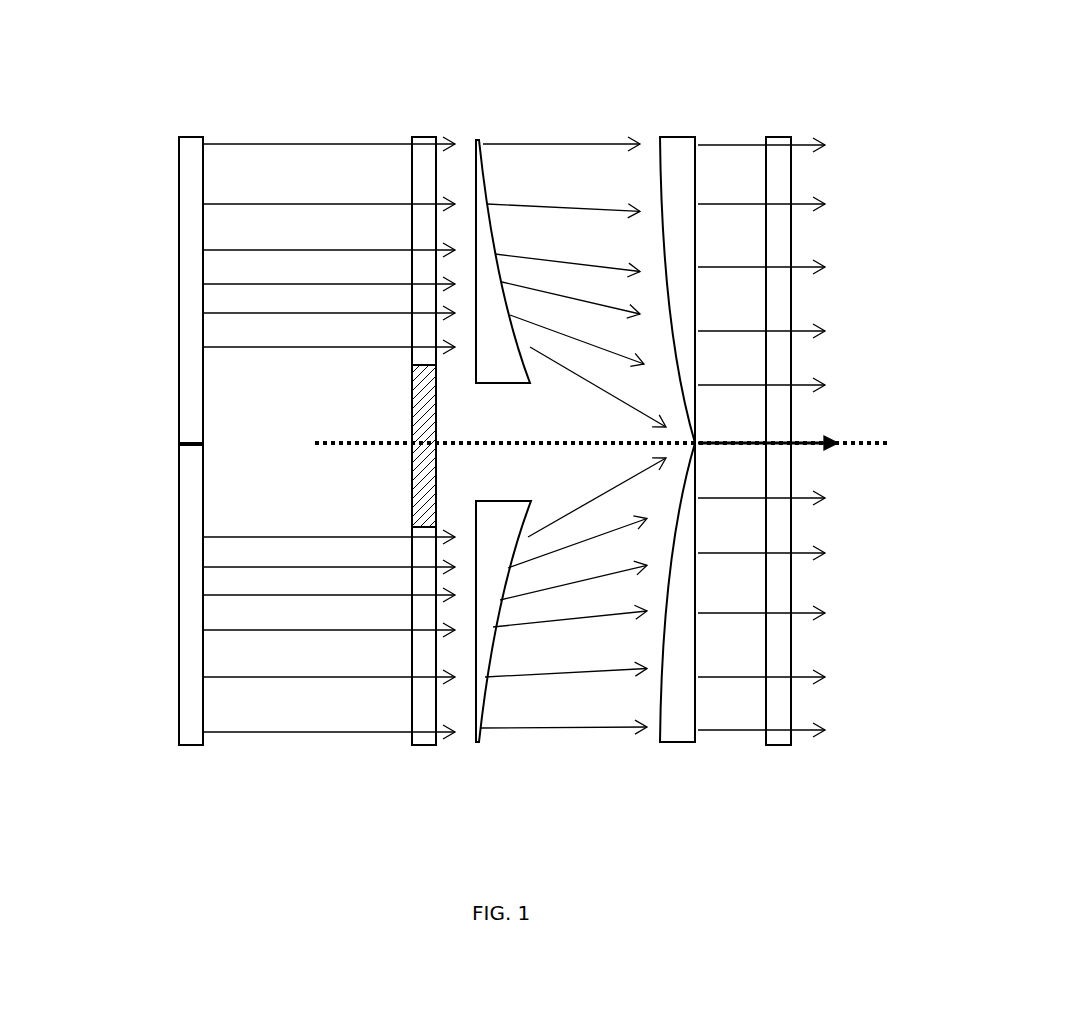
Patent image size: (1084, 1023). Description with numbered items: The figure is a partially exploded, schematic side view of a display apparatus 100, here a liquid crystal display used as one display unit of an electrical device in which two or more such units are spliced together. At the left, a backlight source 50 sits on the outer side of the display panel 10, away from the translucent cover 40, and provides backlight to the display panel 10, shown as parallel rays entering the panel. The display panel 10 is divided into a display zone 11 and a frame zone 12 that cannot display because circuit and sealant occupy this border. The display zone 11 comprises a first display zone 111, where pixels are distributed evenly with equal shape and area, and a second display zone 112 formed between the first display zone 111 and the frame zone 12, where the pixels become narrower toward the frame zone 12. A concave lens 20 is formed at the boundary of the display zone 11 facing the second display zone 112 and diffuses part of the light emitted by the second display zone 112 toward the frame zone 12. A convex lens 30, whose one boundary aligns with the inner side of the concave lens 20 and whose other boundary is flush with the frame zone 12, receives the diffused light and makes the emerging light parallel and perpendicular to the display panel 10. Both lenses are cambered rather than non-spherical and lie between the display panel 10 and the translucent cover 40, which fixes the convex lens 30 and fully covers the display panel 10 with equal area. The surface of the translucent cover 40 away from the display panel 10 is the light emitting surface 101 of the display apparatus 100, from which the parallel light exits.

The display panel 10 is at (426, 102).
The display zone 11 is at (352, 88).
The first display zone 111 is at (416, 133).
The second display zone 112 is at (412, 266).
The frame zone 12 is at (413, 390).
The concave lens 20 is at (482, 137).
The convex lens 30 is at (680, 145).
The translucent cover 40 is at (784, 137).
The backlight source 50 is at (195, 137).
The display apparatus 100 is at (170, 137).
The light emitting surface 101 is at (792, 372).